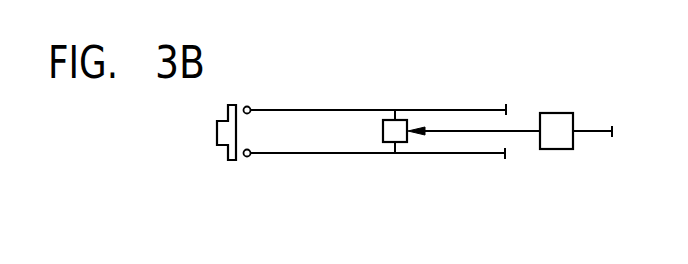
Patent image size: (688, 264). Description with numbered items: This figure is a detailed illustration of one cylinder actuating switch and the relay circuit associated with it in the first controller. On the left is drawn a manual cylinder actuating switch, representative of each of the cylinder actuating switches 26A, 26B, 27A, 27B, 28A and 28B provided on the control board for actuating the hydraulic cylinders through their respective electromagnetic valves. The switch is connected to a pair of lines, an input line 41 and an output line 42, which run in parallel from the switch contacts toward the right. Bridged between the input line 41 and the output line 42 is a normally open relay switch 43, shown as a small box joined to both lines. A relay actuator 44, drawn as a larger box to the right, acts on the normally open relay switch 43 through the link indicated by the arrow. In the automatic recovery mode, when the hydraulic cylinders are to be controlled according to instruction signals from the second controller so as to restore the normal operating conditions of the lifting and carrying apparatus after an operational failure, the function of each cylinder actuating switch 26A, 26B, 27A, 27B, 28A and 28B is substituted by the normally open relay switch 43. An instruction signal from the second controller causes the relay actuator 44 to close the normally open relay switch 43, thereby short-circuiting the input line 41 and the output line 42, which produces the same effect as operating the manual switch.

The cylinder actuating switch 26A is at (363, 161).
The cylinder actuating switch 26B is at (363, 161).
The cylinder actuating switch 27A is at (363, 161).
The cylinder actuating switch 27B is at (363, 161).
The cylinder actuating switch 28A is at (363, 161).
The cylinder actuating switch 28B is at (232, 161).
The input line 41 is at (291, 108).
The output line 42 is at (344, 152).
The normally open relay switch 43 is at (398, 110).
The relay actuator 44 is at (559, 113).